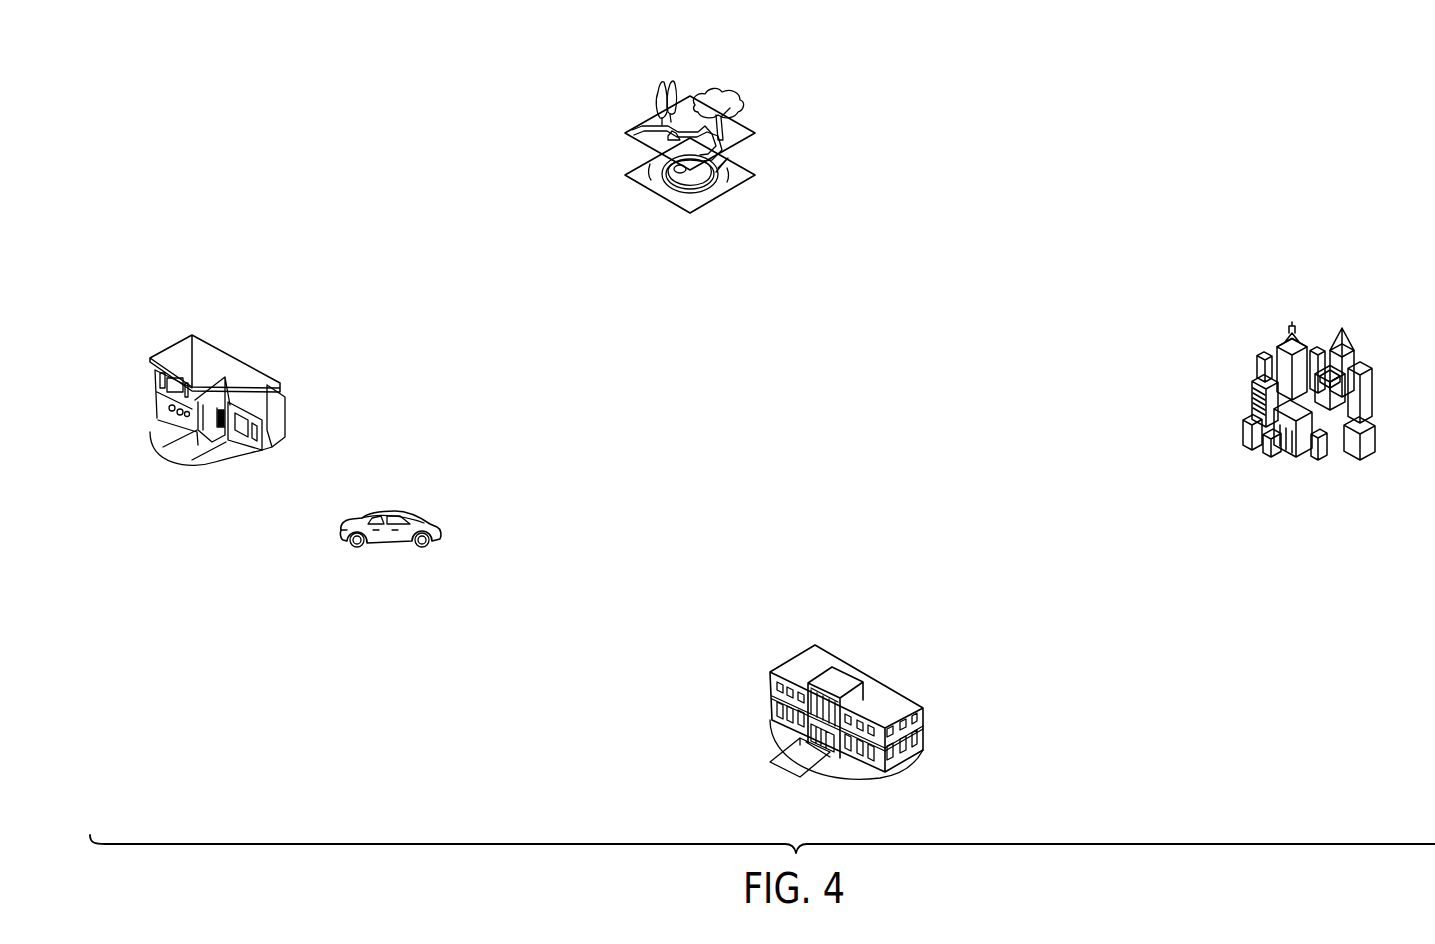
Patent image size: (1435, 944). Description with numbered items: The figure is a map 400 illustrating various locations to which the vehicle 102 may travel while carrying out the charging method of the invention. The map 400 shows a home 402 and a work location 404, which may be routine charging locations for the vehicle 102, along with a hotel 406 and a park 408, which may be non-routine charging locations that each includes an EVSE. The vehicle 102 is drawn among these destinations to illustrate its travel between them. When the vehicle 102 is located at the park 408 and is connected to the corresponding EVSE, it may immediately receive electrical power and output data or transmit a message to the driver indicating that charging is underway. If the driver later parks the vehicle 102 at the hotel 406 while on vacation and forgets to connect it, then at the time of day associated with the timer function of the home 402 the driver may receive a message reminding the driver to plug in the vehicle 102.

The map 400 is at (182, 88).
The home 402 is at (156, 380).
The work location 404 is at (1373, 382).
The hotel 406 is at (923, 740).
The park 408 is at (688, 93).
The vehicle 102 is at (441, 533).